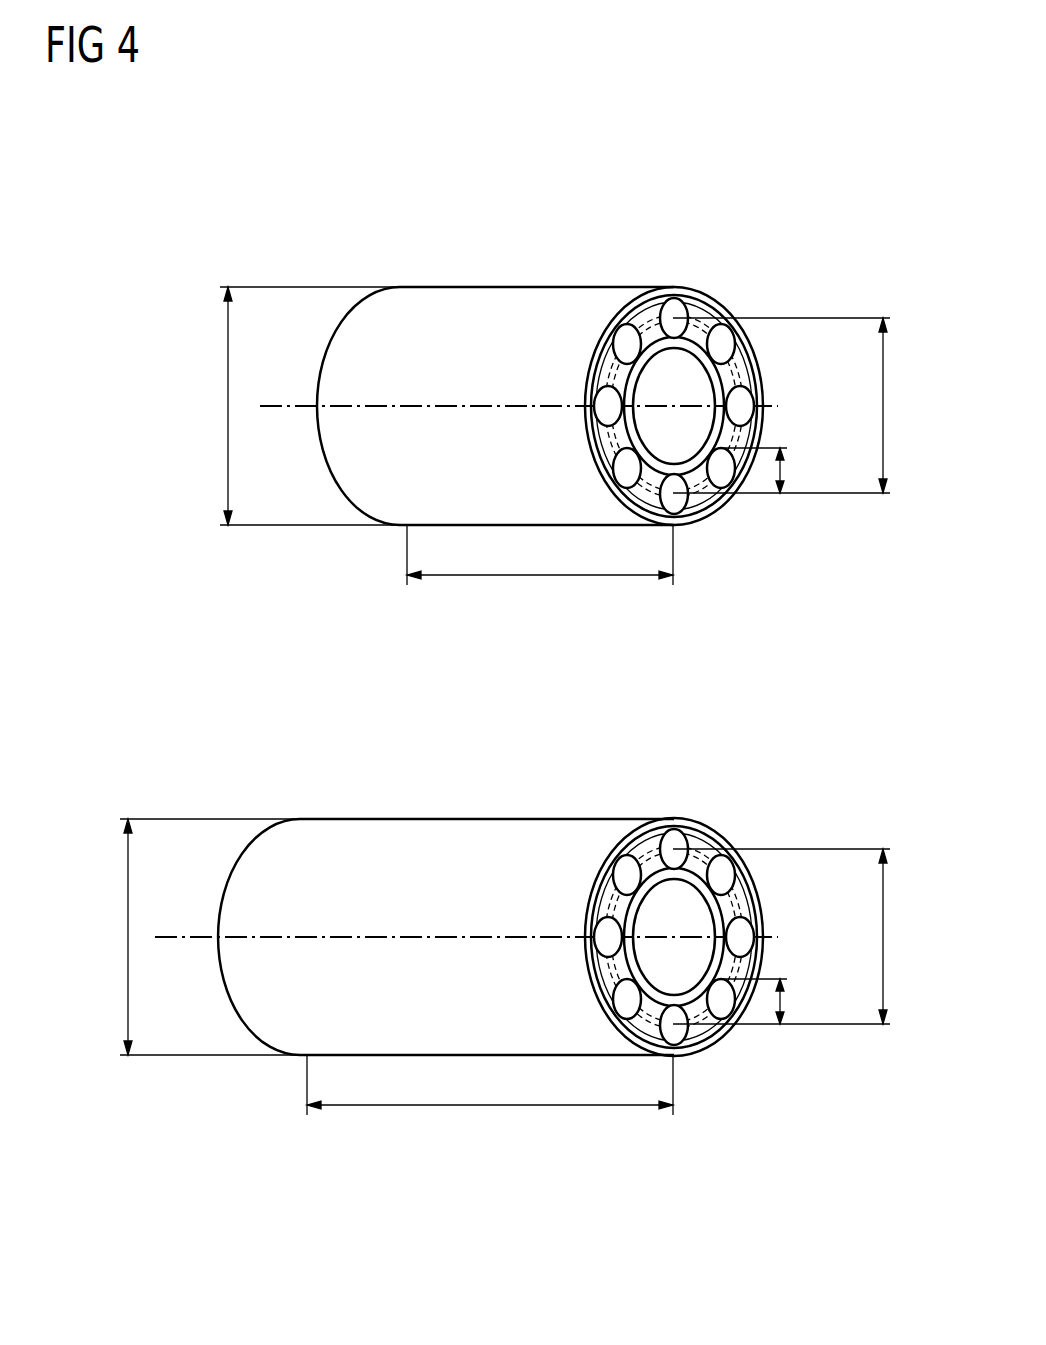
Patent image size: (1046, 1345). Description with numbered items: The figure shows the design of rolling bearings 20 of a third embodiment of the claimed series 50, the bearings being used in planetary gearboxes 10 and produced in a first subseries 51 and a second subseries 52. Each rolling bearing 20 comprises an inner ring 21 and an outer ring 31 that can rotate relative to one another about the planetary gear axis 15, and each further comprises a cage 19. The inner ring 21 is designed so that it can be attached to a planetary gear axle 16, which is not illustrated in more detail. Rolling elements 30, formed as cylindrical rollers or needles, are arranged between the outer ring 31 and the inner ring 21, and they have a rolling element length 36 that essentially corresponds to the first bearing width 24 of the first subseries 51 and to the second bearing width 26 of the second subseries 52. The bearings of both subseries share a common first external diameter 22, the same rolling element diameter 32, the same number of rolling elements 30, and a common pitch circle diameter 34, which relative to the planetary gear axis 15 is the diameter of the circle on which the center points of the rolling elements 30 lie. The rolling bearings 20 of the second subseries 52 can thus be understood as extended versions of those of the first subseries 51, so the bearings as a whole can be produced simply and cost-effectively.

The planetary gearbox 10 is at (491, 661).
The series 50 is at (602, 116).
The planetary gear axis 15 is at (270, 406).
The planetary gear axle 16 is at (690, 385).
The cage 19 is at (745, 455).
The rolling bearing 20 is at (482, 287).
The first subseries 51 is at (495, 406).
The second subseries 52 is at (446, 937).
The inner ring 21 is at (657, 320).
The first external diameter 22 is at (228, 428).
The first bearing width 24 is at (540, 555).
The second bearing width 26 is at (490, 1085).
The rolling element length 36 is at (530, 578).
The rolling element 30 is at (674, 313).
The outer ring 31 is at (700, 516).
The rolling element diameter 32 is at (781, 470).
The pitch circle diameter 34 is at (884, 405).